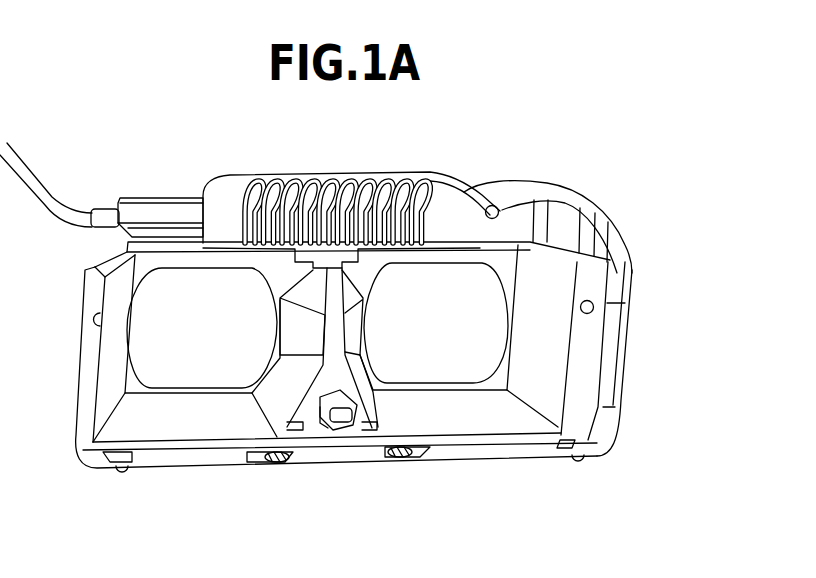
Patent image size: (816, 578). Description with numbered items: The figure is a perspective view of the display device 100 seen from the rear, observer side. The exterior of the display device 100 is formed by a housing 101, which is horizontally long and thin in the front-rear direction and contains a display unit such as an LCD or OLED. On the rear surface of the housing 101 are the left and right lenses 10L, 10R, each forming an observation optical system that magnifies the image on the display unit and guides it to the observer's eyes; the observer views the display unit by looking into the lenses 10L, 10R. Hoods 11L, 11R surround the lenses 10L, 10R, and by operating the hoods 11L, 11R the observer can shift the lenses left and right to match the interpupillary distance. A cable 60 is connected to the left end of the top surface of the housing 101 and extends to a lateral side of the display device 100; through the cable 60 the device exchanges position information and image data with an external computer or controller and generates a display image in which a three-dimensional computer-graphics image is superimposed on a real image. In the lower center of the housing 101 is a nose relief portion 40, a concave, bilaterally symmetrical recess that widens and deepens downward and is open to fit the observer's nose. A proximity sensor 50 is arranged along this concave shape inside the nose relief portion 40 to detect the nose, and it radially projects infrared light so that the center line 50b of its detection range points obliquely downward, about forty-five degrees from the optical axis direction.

The display device 100 is at (536, 155).
The housing 101 is at (620, 280).
The cable 60 is at (165, 214).
The left lens 10L is at (192, 343).
The right lens 10R is at (422, 338).
The left hood 11L is at (210, 423).
The right hood 11R is at (457, 418).
The nose relief portion 40 is at (348, 443).
The proximity sensor 50 is at (345, 430).
The center line 50b is at (325, 428).